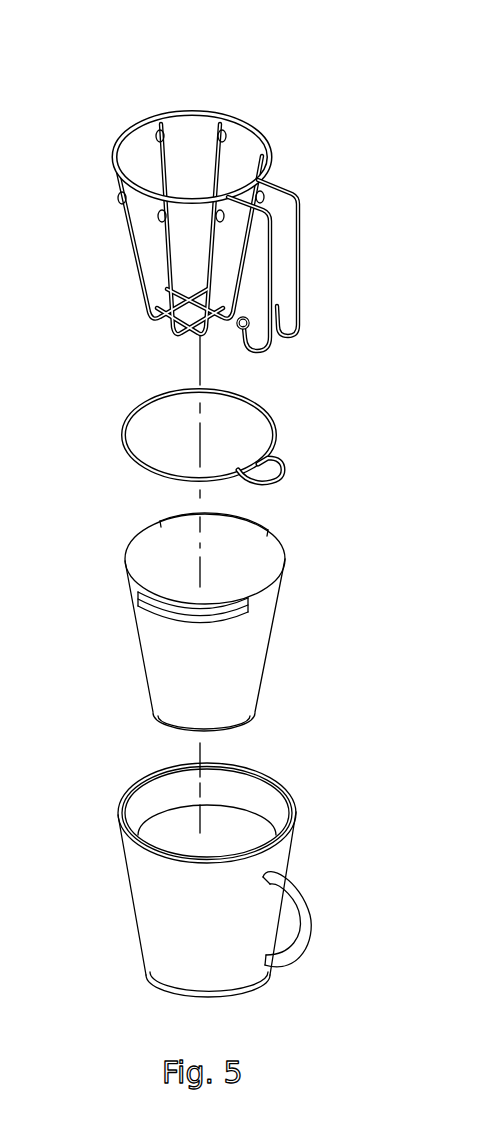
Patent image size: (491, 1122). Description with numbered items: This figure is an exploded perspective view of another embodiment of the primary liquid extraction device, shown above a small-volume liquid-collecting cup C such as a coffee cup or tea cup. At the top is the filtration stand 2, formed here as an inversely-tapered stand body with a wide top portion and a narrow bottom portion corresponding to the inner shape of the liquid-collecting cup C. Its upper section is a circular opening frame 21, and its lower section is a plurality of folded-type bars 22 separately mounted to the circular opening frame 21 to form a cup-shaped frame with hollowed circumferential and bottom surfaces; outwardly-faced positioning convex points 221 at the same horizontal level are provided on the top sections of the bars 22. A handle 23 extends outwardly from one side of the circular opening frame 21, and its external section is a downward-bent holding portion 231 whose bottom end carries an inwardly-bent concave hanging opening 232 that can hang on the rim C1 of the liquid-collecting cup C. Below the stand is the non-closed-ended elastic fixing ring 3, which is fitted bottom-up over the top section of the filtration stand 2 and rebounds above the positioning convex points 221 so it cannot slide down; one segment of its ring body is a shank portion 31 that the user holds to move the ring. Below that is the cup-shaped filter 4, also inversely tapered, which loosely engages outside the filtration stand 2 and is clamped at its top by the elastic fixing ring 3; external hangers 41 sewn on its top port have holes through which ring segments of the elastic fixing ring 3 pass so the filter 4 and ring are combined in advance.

The filtration stand 2 is at (214, 213).
The circular opening frame 21 is at (128, 128).
The folded-type bars 22 is at (217, 160).
The positioning convex points 221 is at (118, 200).
The handle 23 is at (310, 248).
The holding portion 231 is at (298, 275).
The hanging opening 232 is at (245, 331).
The elastic fixing ring 3 is at (219, 426).
The shank portion 31 is at (280, 462).
The filter 4 is at (181, 622).
The external hangers 41 is at (143, 607).
The liquid-collecting cup C is at (218, 864).
The rim C1 is at (271, 778).